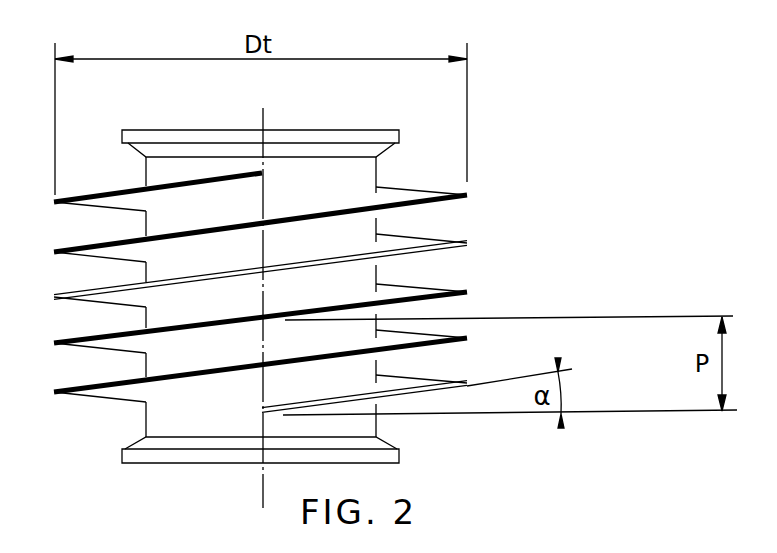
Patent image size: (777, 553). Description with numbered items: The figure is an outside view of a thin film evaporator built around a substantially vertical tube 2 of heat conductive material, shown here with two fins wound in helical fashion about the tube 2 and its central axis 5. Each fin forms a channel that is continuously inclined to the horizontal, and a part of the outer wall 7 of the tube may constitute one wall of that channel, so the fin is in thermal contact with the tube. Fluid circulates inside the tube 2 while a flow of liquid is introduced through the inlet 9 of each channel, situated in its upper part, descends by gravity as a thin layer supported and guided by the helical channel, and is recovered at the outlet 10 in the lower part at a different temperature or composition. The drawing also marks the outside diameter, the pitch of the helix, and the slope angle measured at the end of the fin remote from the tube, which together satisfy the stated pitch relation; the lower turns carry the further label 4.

The tube 2 is at (380, 170).
The spring end turns 4 is at (90, 396).
The central axis 5 is at (265, 110).
The outer wall 7 is at (145, 423).
The inlet 9 is at (237, 167).
The outlet 10 is at (248, 432).